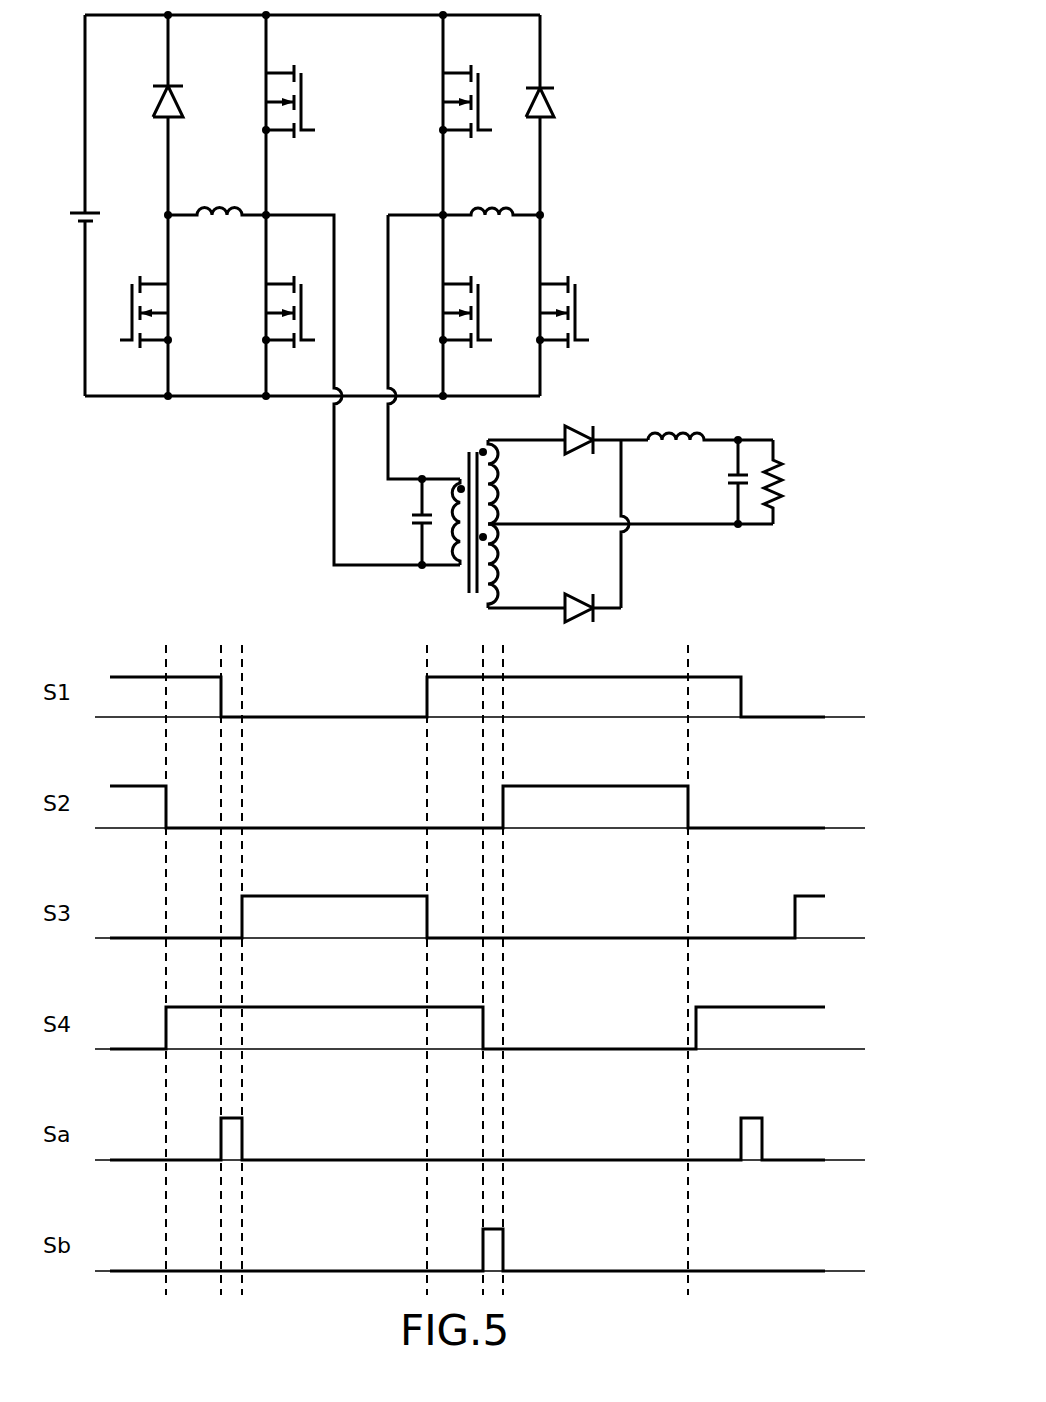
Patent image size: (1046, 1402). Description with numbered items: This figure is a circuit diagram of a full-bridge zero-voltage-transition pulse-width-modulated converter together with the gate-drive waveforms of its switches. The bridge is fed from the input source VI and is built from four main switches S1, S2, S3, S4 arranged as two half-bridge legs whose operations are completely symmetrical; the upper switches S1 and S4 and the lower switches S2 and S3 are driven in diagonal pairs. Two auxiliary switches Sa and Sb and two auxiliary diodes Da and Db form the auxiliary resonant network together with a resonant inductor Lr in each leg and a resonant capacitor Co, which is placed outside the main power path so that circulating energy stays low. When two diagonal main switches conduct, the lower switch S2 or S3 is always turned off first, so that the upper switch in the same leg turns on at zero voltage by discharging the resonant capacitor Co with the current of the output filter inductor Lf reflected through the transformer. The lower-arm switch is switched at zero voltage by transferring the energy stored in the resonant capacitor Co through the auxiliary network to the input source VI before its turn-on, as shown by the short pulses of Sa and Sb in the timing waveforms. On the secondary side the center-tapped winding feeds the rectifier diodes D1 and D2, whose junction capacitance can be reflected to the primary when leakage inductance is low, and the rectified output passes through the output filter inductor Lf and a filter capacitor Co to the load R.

The input voltage source VI is at (72, 205).
The auxiliary diode Da is at (186, 115).
The auxiliary diode Db is at (562, 115).
The main switch S1 is at (305, 115).
The main switch S2 is at (479, 305).
The main switch S3 is at (264, 305).
The main switch S4 is at (479, 115).
The auxiliary switch Sa is at (136, 329).
The auxiliary switch Sb is at (576, 305).
The resonant inductor Lr is at (354, 226).
The capacitor Co is at (567, 502).
The rectifier diode D1 is at (606, 429).
The rectifier diode D2 is at (593, 591).
The output filter inductor Lf is at (710, 422).
The load resistor R is at (783, 482).